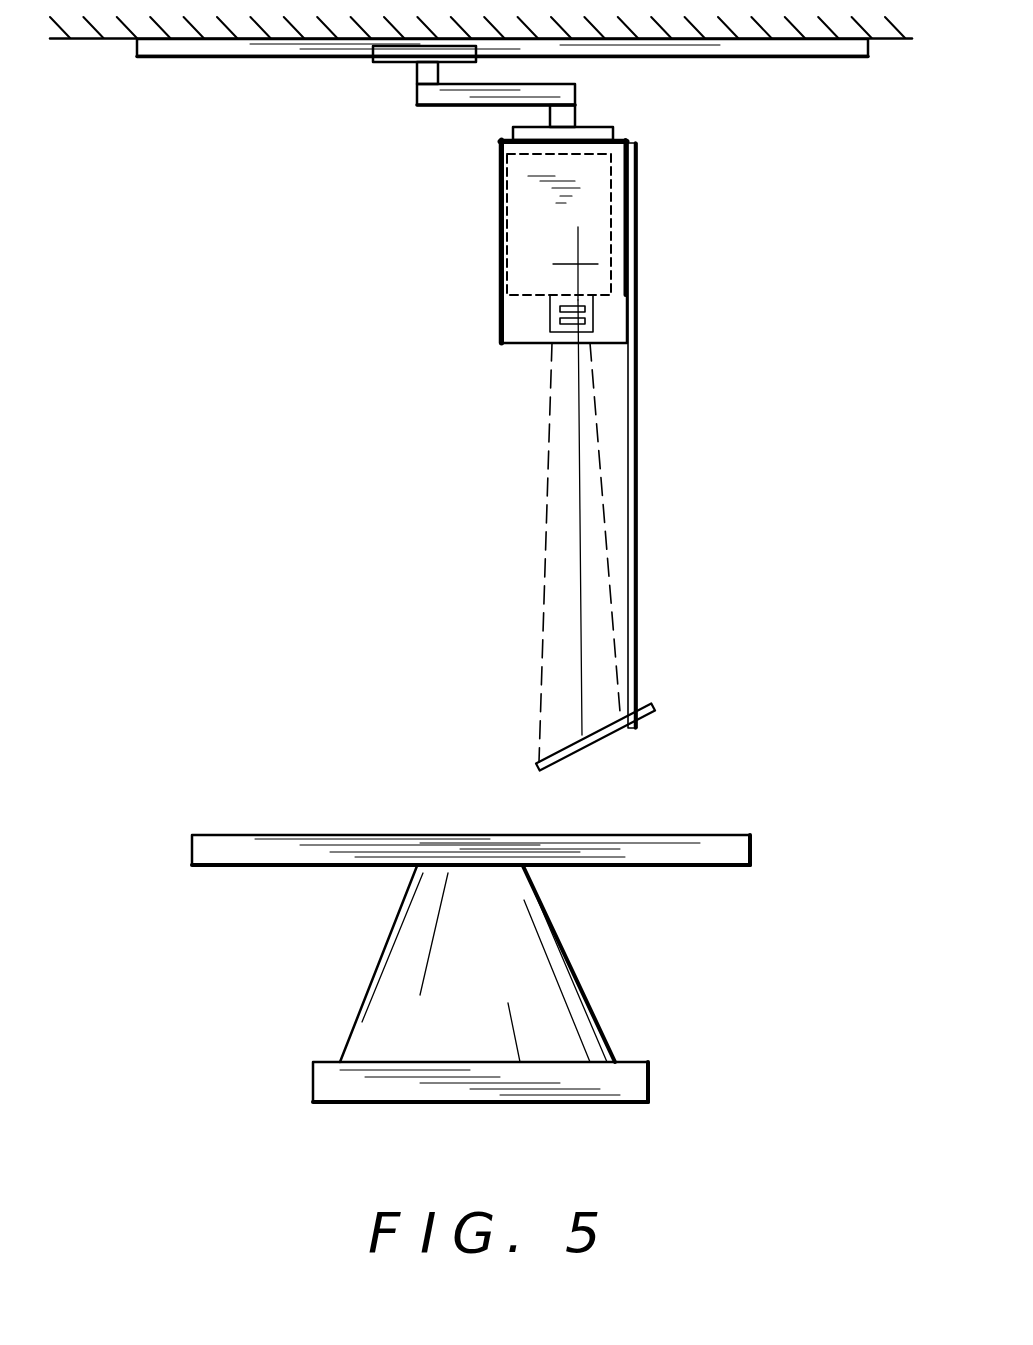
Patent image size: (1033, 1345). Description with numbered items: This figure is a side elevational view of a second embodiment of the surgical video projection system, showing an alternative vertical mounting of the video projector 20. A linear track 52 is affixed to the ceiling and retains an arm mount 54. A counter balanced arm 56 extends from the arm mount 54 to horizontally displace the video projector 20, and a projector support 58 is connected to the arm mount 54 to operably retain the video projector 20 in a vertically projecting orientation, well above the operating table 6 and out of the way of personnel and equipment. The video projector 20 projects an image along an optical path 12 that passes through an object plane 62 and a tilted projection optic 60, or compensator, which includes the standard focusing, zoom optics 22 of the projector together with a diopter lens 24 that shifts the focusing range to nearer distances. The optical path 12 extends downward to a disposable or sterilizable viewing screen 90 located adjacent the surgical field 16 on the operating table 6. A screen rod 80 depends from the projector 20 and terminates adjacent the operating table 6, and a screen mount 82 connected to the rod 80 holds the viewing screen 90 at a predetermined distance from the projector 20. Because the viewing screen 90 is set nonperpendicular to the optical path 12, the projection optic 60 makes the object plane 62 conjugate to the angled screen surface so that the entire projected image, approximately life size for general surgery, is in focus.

The operating table 6 is at (212, 835).
The optical path 12 is at (580, 585).
The surgical field 16 is at (477, 809).
The video projector 20 is at (598, 252).
The focusing, zoom optics 22 is at (558, 310).
The diopter lens 24 is at (558, 320).
The linear track 52 is at (337, 58).
The arm mount 54 is at (417, 65).
The counter balanced arm 56 is at (438, 105).
The projector support 58 is at (575, 125).
The tilted projection optic 60 is at (548, 324).
The object plane 62 is at (598, 266).
The screen rod 80 is at (638, 493).
The screen mount 82 is at (653, 707).
The viewing screen 90 is at (580, 735).